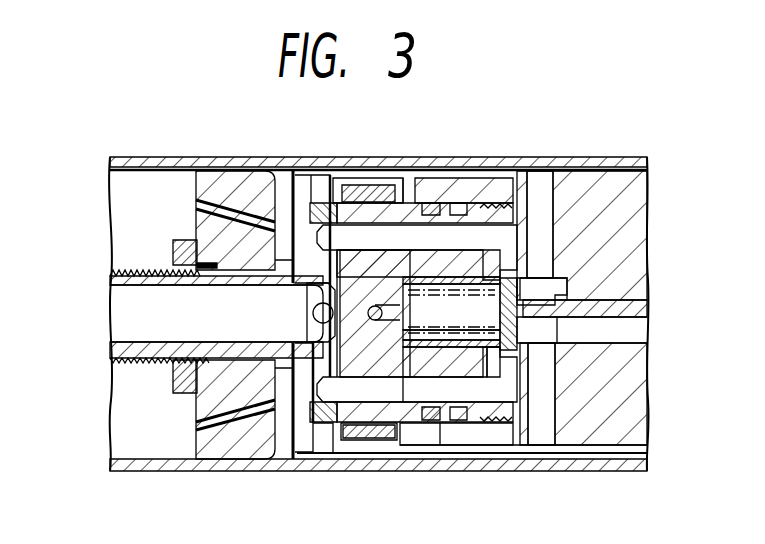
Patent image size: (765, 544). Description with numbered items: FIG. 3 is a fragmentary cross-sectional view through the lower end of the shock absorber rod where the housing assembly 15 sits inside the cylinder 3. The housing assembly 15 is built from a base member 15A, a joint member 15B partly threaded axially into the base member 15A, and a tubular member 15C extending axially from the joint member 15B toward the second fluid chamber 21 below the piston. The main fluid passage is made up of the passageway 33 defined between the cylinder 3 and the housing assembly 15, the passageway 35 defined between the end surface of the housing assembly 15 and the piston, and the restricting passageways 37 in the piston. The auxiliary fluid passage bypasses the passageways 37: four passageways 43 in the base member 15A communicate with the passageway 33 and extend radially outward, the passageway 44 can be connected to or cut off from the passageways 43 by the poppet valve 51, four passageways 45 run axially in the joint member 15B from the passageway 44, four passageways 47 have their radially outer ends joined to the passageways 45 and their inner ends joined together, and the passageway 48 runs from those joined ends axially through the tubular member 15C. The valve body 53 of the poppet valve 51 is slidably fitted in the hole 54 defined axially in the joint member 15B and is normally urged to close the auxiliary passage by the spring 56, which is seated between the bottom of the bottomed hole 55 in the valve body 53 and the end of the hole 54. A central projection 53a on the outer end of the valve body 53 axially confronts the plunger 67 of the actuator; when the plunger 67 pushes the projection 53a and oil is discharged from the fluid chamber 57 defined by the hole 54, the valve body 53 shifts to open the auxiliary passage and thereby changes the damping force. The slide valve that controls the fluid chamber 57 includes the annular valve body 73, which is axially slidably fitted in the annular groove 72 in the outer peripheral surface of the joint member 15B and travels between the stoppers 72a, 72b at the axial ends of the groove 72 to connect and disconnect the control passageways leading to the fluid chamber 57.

The cylinder 3 is at (598, 160).
The housing assembly 15 is at (565, 188).
The base member 15A is at (610, 185).
The joint member 15B is at (404, 210).
The tubular member 15C is at (180, 252).
The second fluid chamber 21 is at (128, 185).
The passageway 33 is at (521, 205).
The passageway 35 is at (284, 200).
The passageways 37 is at (213, 210).
The passageways 43 is at (540, 217).
The passageway 44 is at (503, 266).
The passageways 45 is at (460, 238).
The passageways 47 is at (321, 222).
The passageway 48 is at (246, 248).
The poppet valve 51 is at (540, 350).
The valve body 53 is at (520, 345).
The central projection 53a is at (560, 300).
The hole 54 is at (478, 388).
The bottomed hole 55 is at (470, 405).
The spring 56 is at (428, 335).
The fluid chamber 57 is at (420, 318).
The plunger 67 is at (618, 300).
The annular groove 72 is at (325, 420).
The stopper 72a is at (327, 453).
The stopper 72b is at (413, 402).
The annular valve body 73 is at (380, 454).